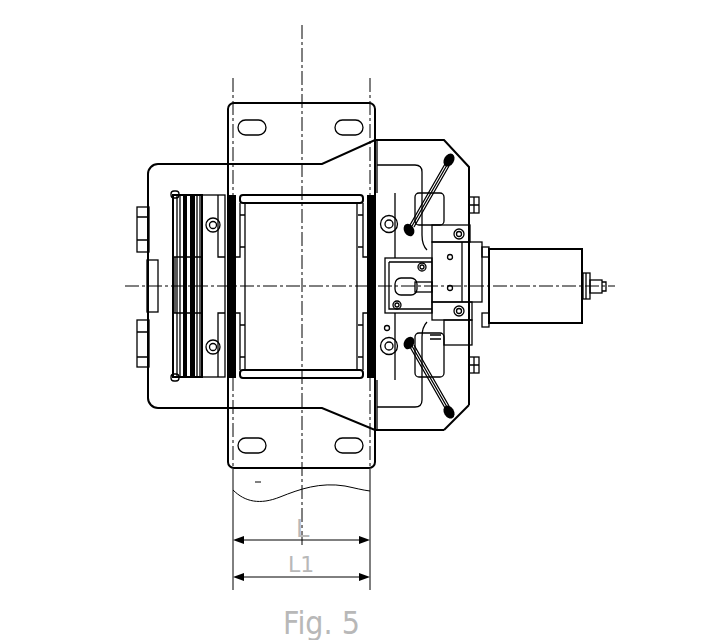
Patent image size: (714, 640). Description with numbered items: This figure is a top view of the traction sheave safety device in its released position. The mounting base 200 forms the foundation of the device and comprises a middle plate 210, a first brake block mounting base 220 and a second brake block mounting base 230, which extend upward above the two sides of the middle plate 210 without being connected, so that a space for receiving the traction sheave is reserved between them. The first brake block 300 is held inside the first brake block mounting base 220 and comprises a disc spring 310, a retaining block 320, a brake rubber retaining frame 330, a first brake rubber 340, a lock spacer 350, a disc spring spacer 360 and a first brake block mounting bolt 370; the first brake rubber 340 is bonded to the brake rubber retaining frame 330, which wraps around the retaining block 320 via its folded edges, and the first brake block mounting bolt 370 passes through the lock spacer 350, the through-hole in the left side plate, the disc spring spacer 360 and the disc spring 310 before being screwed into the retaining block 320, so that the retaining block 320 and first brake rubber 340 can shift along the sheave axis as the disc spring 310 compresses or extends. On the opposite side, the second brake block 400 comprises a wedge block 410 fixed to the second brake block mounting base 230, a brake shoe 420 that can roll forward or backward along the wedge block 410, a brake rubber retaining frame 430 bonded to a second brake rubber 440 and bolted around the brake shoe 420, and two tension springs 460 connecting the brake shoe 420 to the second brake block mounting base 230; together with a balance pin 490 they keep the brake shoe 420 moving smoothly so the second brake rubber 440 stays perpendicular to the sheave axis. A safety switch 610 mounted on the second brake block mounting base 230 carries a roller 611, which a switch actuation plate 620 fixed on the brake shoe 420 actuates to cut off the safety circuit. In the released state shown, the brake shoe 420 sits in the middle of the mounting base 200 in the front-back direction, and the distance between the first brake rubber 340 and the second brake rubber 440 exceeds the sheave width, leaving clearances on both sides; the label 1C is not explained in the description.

The mounting base 200 is at (256, 245).
The middle plate 210 is at (406, 226).
The first brake block mounting base 220 is at (260, 226).
The second brake block mounting base 230 is at (441, 201).
The first brake block 300 is at (138, 230).
The disc spring 310 is at (119, 275).
The retaining block 320 is at (119, 286).
The brake rubber retaining frame 330 is at (130, 286).
The first brake rubber 340 is at (138, 286).
The lock spacer 350 is at (102, 346).
The disc spring spacer 360 is at (119, 337).
The first brake block mounting bolt 370 is at (100, 190).
The second brake block 400 is at (486, 222).
The wedge block 410 is at (474, 233).
The brake shoe 420 is at (485, 203).
The brake rubber retaining frame 430 is at (482, 400).
The second brake rubber 440 is at (438, 416).
The tension springs 460 is at (479, 224).
The balance pin 490 is at (516, 387).
The safety switch 610 is at (497, 265).
The roller 611 is at (523, 307).
The switch actuation plate 620 is at (503, 390).
The brake device 1C is at (165, 457).